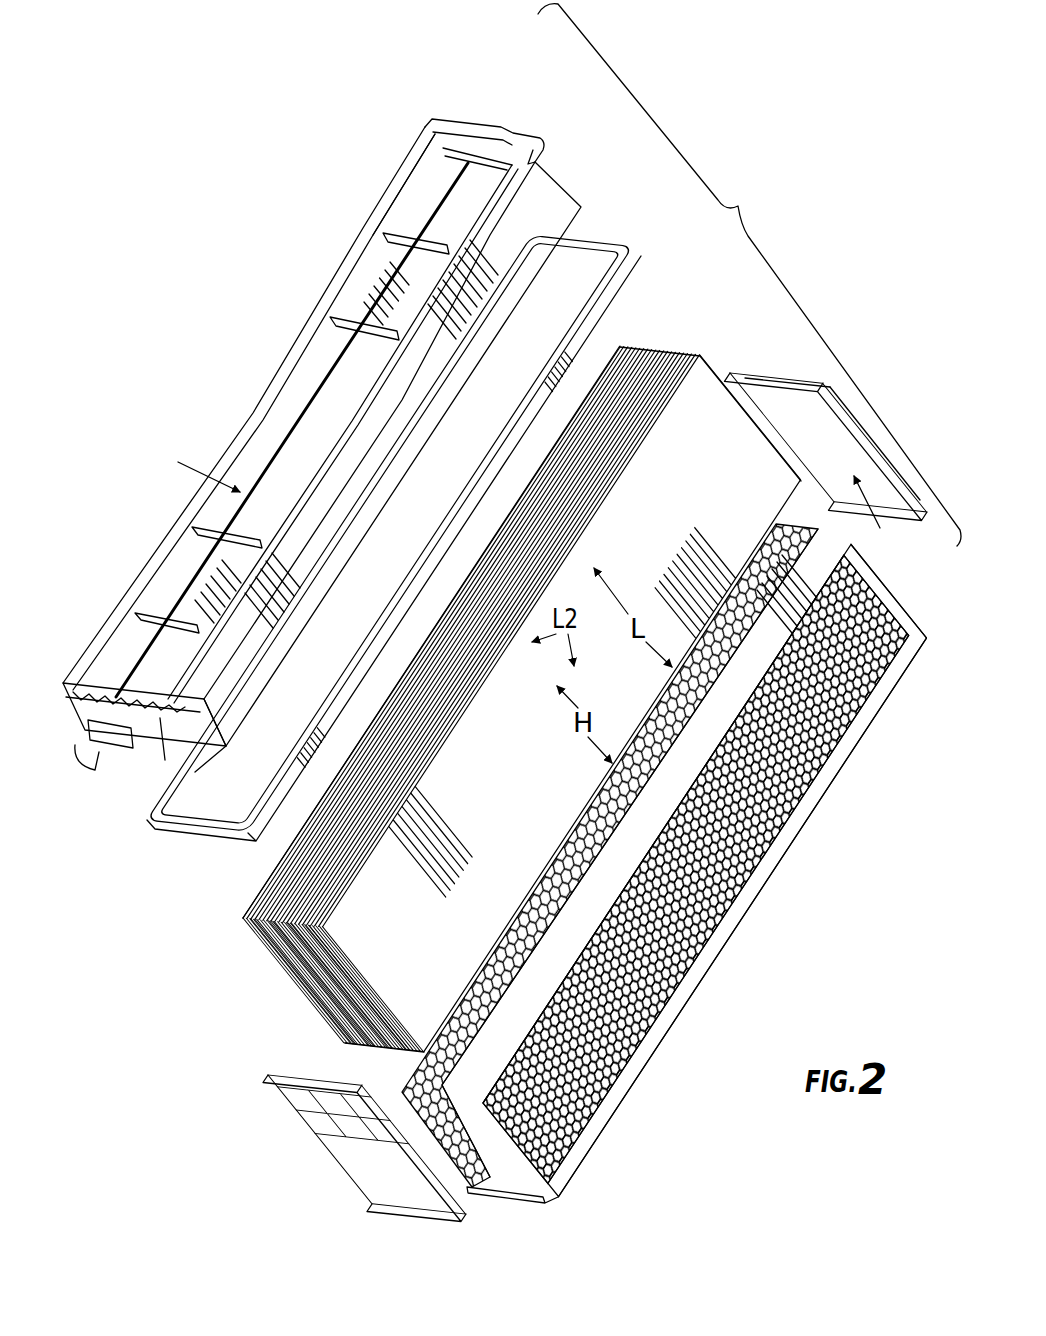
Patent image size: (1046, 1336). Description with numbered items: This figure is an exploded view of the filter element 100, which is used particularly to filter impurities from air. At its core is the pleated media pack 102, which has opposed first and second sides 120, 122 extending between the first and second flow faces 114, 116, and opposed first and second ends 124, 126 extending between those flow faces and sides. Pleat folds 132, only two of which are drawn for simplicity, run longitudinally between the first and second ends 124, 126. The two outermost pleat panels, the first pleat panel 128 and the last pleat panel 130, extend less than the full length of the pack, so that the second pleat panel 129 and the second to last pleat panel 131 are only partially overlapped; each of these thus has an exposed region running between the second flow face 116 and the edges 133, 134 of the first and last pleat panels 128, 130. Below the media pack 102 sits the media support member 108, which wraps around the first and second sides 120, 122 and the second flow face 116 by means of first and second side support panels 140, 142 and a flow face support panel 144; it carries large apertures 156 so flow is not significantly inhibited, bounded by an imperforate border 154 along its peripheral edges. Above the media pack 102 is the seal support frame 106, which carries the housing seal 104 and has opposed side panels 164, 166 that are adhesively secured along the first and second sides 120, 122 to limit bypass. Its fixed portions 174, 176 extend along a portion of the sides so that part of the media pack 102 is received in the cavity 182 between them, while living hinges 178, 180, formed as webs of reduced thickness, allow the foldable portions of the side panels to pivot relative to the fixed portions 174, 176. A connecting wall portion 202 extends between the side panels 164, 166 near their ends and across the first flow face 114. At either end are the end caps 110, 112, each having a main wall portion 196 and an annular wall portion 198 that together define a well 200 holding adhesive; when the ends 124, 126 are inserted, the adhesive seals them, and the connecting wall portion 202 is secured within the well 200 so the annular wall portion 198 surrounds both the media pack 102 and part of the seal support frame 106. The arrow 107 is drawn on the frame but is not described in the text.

The filter element 100 is at (749, 275).
The media pack 102 is at (477, 690).
The housing seal 104 is at (364, 575).
The seal support frame 106 is at (85, 735).
The direction arrow 107 is at (187, 467).
The media support member 108 is at (675, 897).
The end cap 110 is at (326, 1144).
The end cap 112 is at (831, 429).
The first flow face 114 is at (323, 843).
The second flow face 116 is at (362, 1053).
The first side 120 is at (295, 1010).
The second side 122 is at (610, 1093).
The first end 124 is at (300, 922).
The second end 126 is at (742, 378).
The first pleat panel 128 is at (262, 935).
The second pleat panel 129 is at (305, 1040).
The last pleat panel 130 is at (632, 1040).
The second to last pleat panel 131 is at (582, 1130).
The pleat folds 132 is at (378, 693).
The edge 133 is at (290, 987).
The edge 134 is at (463, 827).
The first side support panel 140 is at (402, 1100).
The second side support panel 142 is at (493, 1133).
The flow face support panel 144 is at (480, 1198).
The imperforate border 154 is at (868, 590).
The apertures 156 is at (770, 802).
The side panel 164 is at (118, 765).
The side panel 166 is at (195, 772).
The fixed portion 174 is at (95, 790).
The fixed portion 176 is at (128, 688).
The hinge 178 is at (95, 700).
The hinge 180 is at (212, 705).
The cavity 182 is at (158, 758).
The main wall portion 196 is at (812, 418).
The annular wall portion 198 is at (842, 413).
The well 200 is at (877, 516).
The connecting wall portion 202 is at (535, 162).